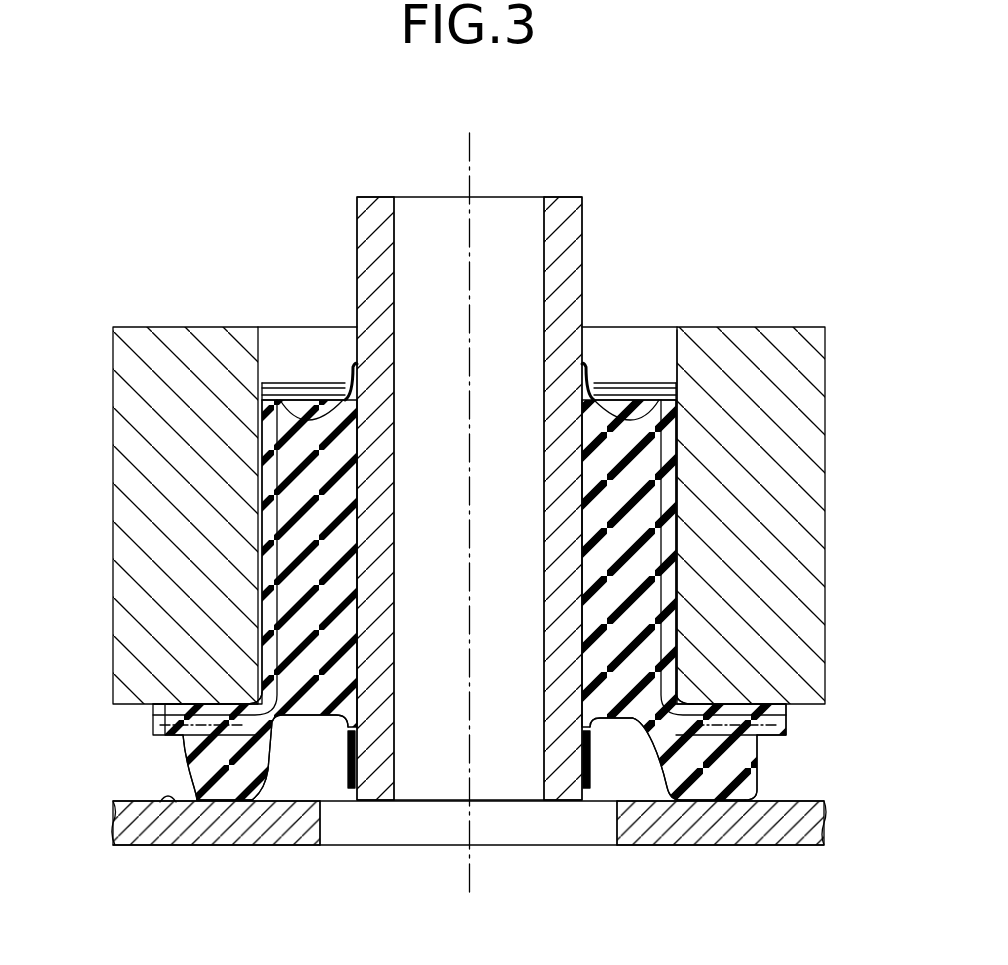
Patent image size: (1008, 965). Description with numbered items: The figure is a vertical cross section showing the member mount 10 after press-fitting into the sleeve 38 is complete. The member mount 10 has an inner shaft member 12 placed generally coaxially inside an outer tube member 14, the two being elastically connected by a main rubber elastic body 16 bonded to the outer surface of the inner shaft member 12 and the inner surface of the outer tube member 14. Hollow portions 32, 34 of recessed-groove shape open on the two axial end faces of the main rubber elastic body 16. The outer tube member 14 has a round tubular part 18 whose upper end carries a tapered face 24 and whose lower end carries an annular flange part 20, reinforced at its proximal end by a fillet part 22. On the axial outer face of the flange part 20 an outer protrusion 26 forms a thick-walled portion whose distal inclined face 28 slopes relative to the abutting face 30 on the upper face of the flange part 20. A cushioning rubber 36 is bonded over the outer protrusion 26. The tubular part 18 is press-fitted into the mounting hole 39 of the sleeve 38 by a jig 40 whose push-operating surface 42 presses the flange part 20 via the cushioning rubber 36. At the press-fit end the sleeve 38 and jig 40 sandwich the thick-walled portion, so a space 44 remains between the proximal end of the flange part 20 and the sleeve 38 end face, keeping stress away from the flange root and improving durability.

The member mount 10 is at (328, 366).
The inner shaft member 12 is at (596, 266).
The outer tube member 14 is at (804, 713).
The main rubber elastic body 16 is at (630, 565).
The tubular part 18 is at (272, 528).
The flange part 20 is at (213, 717).
The fillet part 22 is at (260, 720).
The tapered face 24 is at (262, 385).
The outer protrusion 26 is at (165, 730).
The inclined face 28 is at (184, 752).
The abutting face 30 is at (165, 703).
The hollow portion 32 is at (612, 400).
The hollow portion 34 is at (600, 722).
The cushioning rubber 36 is at (710, 766).
The sleeve 38 is at (768, 425).
The mounting hole 39 is at (678, 350).
The jig 40 is at (258, 830).
The push-operating surface 42 is at (160, 802).
The space 44 is at (712, 698).